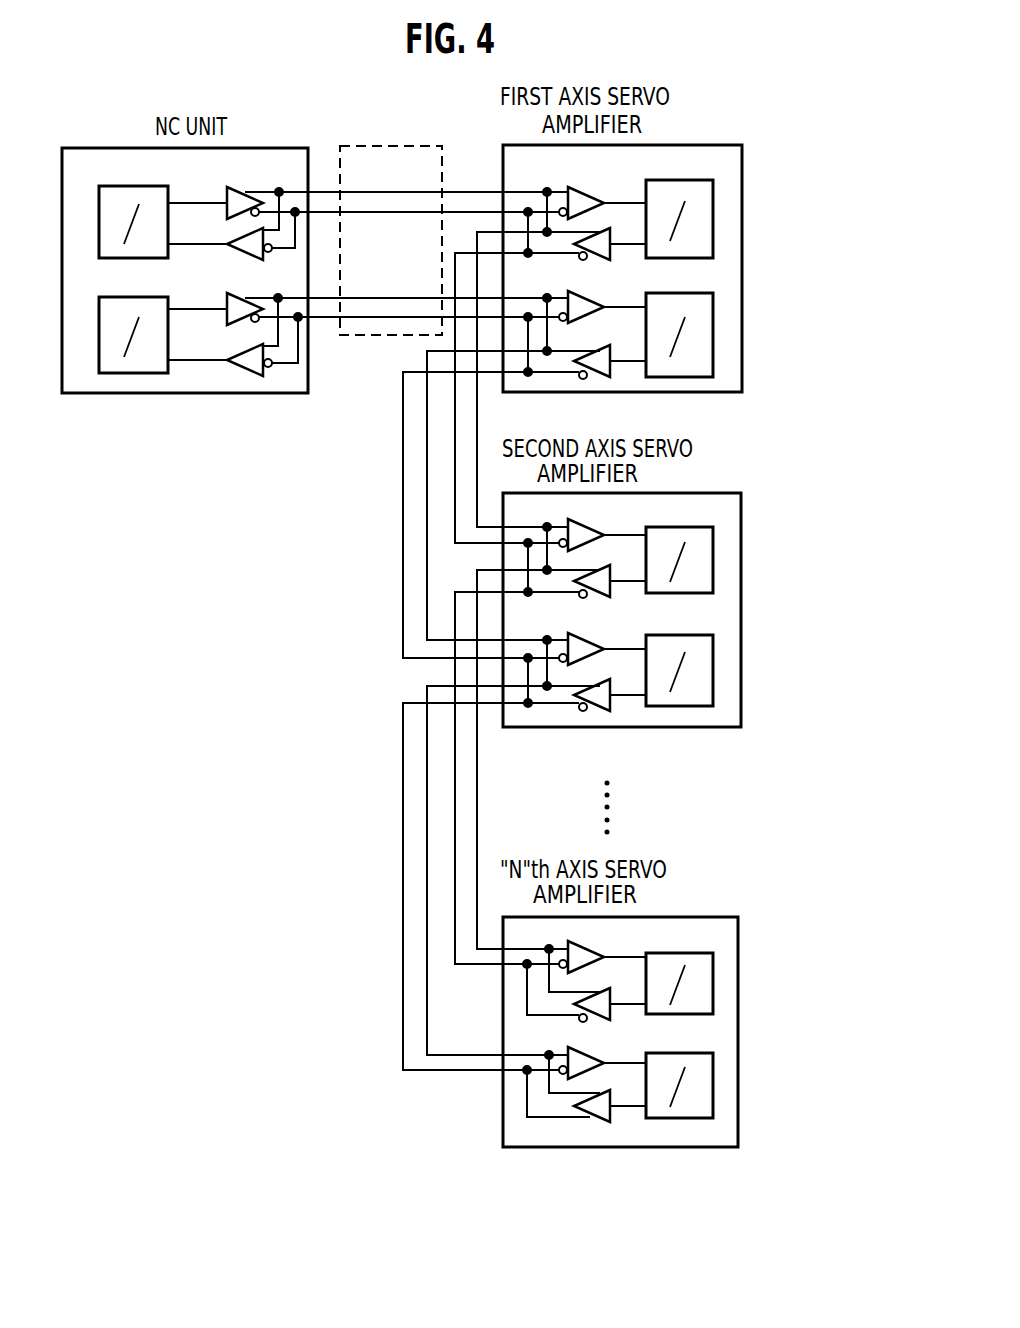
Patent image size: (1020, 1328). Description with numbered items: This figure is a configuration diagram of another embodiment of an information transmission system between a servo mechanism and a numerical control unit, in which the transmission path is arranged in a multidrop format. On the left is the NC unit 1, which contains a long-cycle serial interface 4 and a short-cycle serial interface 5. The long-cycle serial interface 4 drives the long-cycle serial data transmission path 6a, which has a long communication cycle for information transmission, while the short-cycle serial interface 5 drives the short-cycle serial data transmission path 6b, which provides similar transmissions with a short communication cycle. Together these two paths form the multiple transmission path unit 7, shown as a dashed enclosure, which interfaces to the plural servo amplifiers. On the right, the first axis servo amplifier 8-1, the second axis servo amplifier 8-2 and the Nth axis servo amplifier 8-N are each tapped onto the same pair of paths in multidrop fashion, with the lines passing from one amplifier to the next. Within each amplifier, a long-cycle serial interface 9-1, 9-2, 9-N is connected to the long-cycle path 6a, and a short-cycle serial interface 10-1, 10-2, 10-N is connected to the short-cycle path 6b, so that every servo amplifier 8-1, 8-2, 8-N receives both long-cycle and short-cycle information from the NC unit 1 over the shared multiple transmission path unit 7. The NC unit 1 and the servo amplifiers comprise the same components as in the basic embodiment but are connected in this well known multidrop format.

The NC unit 1 is at (192, 394).
The long-cycle serial interface 4 is at (169, 192).
The short-cycle serial interface 5 is at (113, 374).
The long-cycle serial data transmission path 6a is at (372, 192).
The short-cycle serial data transmission path 6b is at (378, 297).
The multiple transmission path unit 7 is at (382, 338).
The servo amplifier 8-1 is at (745, 192).
The servo amplifier 8-2 is at (745, 550).
The servo amplifier 8-N is at (742, 972).
The long-cycle serial interface 9-1 is at (654, 181).
The long-cycle serial interface 9-2 is at (657, 527).
The long-cycle serial interface 9-N is at (657, 953).
The short-cycle serial interface 10-1 is at (660, 293).
The short-cycle serial interface 10-2 is at (660, 635).
The short-cycle serial interface 10-N is at (660, 1053).